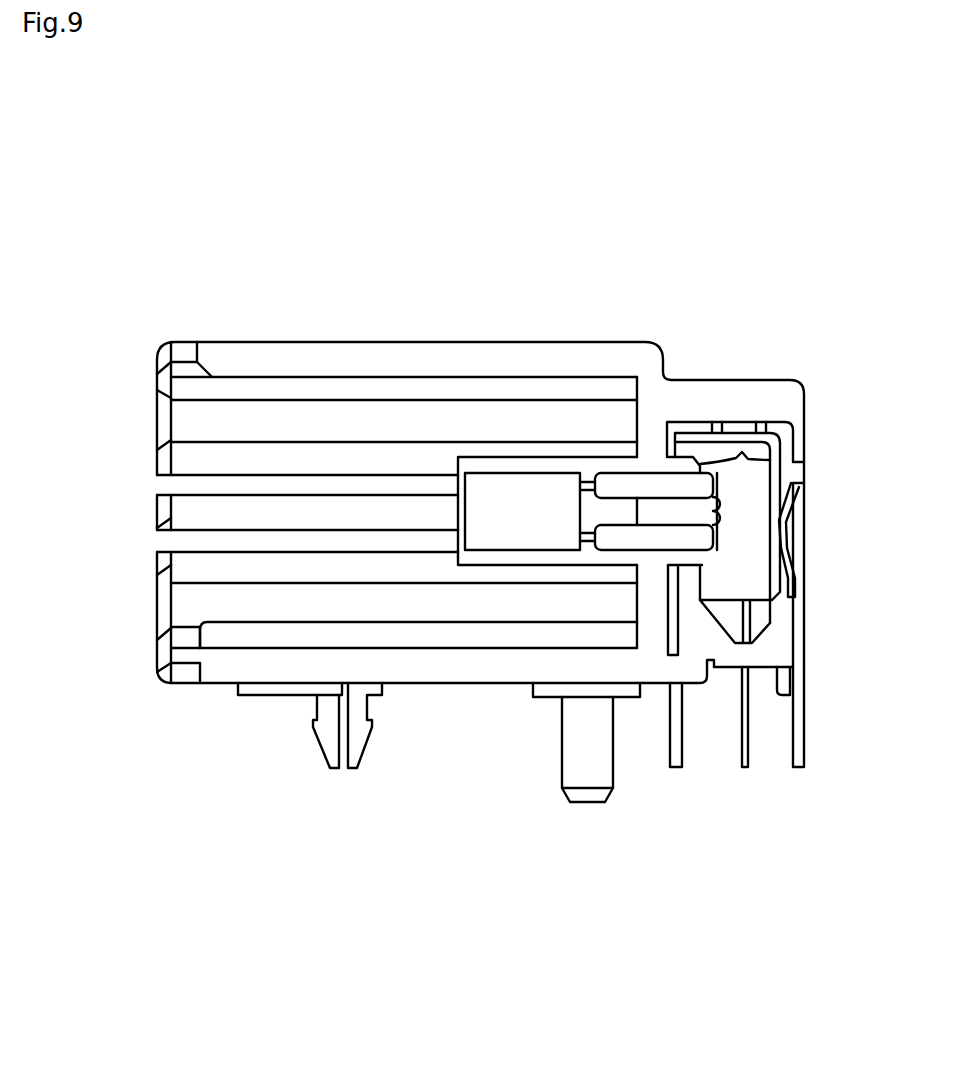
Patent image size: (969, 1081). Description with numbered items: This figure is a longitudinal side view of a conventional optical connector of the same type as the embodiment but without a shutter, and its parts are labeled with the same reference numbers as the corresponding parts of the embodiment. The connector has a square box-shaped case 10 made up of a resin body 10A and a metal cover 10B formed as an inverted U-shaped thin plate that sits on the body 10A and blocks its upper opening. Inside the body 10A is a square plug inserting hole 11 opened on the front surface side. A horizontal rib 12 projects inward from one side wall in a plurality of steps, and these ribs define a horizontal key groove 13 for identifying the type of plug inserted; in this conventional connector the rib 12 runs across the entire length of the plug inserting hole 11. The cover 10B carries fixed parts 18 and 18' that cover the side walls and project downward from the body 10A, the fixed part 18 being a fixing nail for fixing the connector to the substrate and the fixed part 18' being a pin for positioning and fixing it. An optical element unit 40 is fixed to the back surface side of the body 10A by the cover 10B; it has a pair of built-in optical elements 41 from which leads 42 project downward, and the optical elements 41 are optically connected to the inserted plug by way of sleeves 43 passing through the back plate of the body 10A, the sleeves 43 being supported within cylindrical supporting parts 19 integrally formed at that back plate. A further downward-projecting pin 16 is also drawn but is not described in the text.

The case 10 is at (552, 331).
The body 10A is at (458, 340).
The cover 10B is at (804, 589).
The plug inserting hole 11 is at (283, 602).
The horizontal rib 12 is at (283, 452).
The horizontal key groove 13 is at (167, 487).
The center pin 16 is at (588, 803).
The fixed part 18 is at (314, 749).
The fixed part 18' is at (819, 736).
The cylindrical supporting part 19 is at (553, 462).
The optical element unit 40 is at (722, 680).
The optical element 41 is at (733, 470).
The lead 42 is at (748, 745).
The sleeve 43 is at (648, 482).